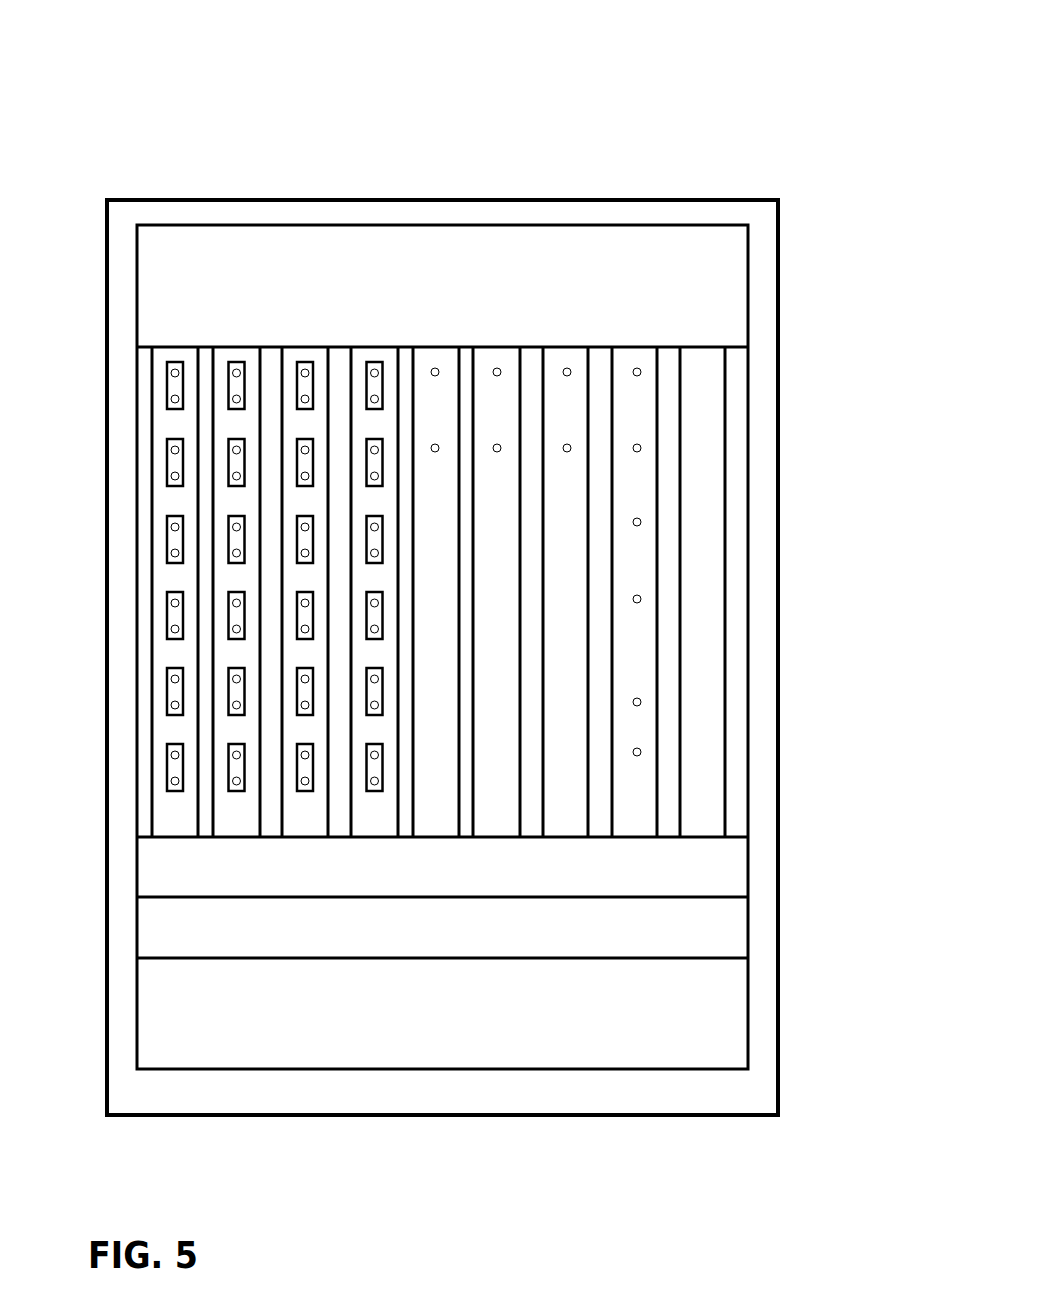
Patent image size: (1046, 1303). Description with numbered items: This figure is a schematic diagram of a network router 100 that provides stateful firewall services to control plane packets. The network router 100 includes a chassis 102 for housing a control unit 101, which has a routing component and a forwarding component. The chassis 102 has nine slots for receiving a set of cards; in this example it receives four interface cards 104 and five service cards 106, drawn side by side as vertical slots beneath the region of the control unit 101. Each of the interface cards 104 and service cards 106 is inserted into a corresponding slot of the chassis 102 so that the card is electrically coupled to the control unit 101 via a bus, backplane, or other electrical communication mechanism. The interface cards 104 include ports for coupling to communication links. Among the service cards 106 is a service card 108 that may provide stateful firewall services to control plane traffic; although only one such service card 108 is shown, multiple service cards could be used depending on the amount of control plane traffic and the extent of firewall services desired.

The network router 100 is at (570, 93).
The chassis 102 is at (562, 198).
The control unit 101 is at (468, 294).
The interface cards 104 is at (190, 328).
The service cards 106 is at (723, 343).
The service card 108 is at (636, 501).